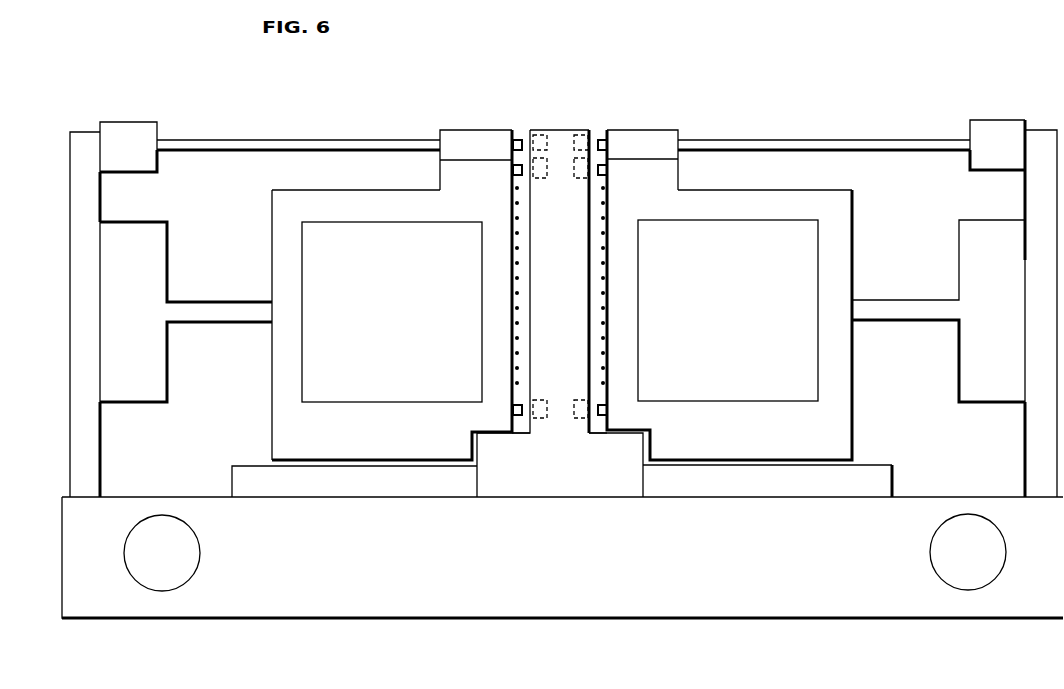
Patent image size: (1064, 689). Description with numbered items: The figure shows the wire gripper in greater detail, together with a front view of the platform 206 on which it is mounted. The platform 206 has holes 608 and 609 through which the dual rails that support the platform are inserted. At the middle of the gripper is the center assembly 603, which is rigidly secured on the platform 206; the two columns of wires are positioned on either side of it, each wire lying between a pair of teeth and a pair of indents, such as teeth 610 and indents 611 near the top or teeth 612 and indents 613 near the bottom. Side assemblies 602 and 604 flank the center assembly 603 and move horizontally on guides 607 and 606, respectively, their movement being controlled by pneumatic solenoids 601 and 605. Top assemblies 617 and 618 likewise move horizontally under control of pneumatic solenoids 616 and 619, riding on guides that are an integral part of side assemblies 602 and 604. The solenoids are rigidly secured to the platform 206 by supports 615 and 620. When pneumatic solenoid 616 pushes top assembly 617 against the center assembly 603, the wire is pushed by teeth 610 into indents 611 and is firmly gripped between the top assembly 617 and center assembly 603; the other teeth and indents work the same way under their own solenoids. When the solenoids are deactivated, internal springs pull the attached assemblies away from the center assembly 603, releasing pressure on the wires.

The platform 206 is at (610, 640).
The pneumatic solenoid 601 is at (167, 232).
The side assembly 602 is at (355, 190).
The center assembly 603 is at (562, 130).
The side assembly 604 is at (805, 175).
The pneumatic solenoid 605 is at (980, 219).
The guide 606 is at (893, 473).
The guide 607 is at (247, 465).
The hole 608 is at (157, 567).
The hole 609 is at (957, 577).
The teeth 610 is at (516, 140).
The indents 611 is at (533, 138).
The teeth 612 is at (512, 407).
The indents 613 is at (543, 415).
The support 615 is at (102, 478).
The pneumatic solenoid 616 is at (122, 122).
The top assembly 617 is at (452, 128).
The top assembly 618 is at (663, 130).
The pneumatic solenoid 619 is at (982, 120).
The supports 620 is at (1024, 433).